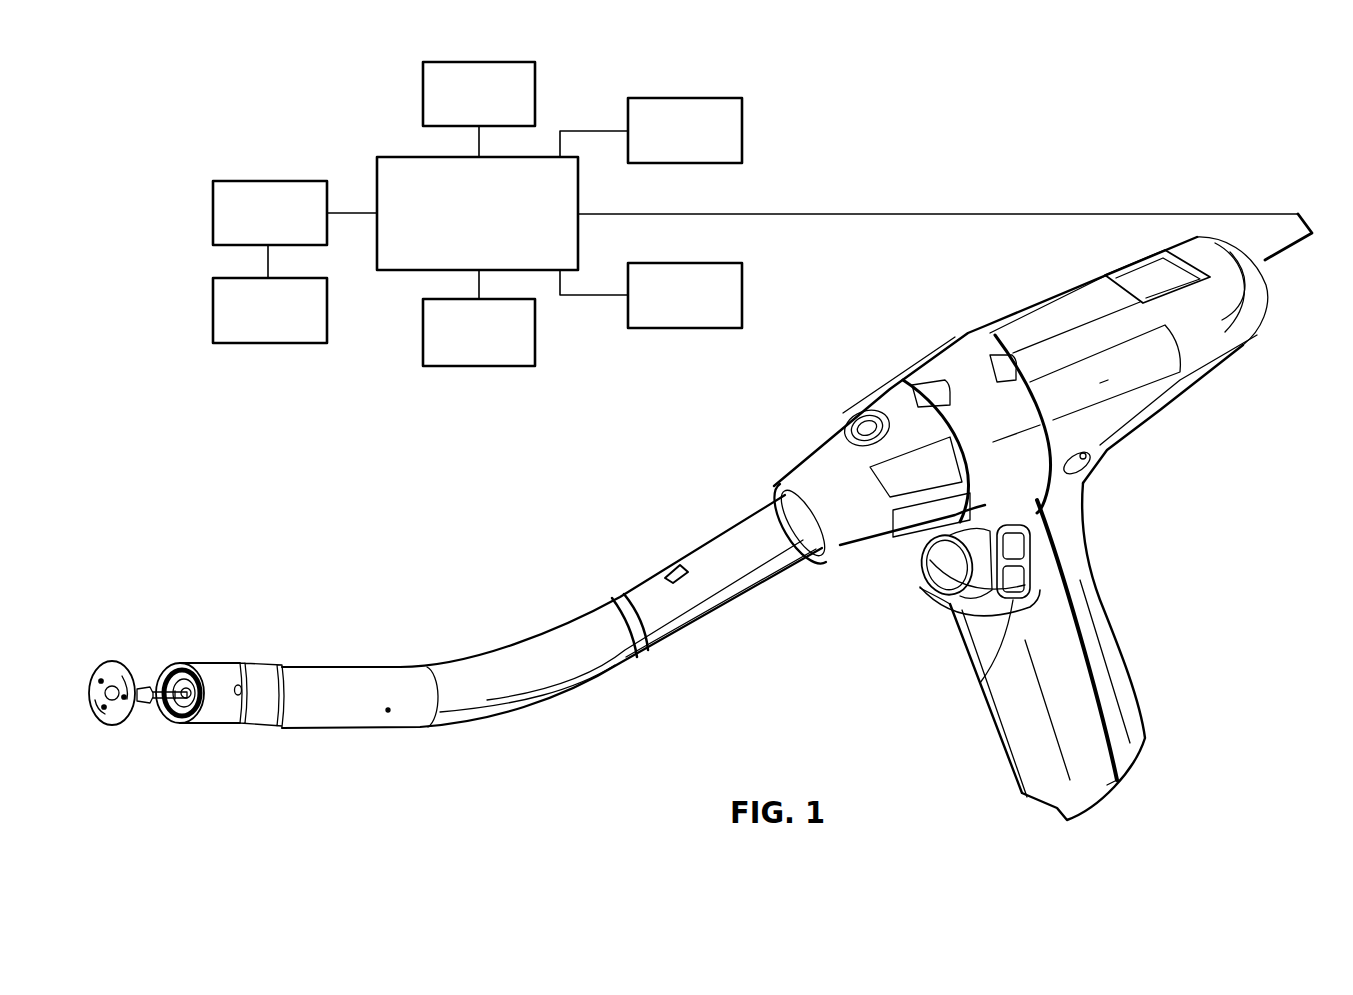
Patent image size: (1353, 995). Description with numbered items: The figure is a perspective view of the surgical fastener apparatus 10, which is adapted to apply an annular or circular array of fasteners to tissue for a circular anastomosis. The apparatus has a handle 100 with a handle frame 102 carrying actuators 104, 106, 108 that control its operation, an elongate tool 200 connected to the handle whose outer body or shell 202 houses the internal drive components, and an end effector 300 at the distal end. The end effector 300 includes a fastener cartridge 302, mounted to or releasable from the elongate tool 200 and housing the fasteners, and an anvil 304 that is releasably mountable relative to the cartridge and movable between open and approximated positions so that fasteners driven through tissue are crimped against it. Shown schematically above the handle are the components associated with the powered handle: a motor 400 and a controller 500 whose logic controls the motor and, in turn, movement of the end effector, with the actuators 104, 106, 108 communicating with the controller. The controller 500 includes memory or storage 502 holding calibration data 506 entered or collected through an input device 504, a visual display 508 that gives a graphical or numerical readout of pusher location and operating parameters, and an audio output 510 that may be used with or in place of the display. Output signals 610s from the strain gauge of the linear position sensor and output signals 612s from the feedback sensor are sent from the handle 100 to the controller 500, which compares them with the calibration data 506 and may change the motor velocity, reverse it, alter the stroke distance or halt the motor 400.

The surgical fastener apparatus 10 is at (701, 480).
The handle 100 is at (1042, 480).
The handle frame 102 is at (1025, 705).
The actuator 104 is at (1017, 597).
The actuator 106 is at (1022, 532).
The actuator 108 is at (940, 558).
The elongate tool 200 is at (552, 615).
The outer body or shell 202 is at (472, 703).
The end effector 300 is at (186, 680).
The fastener cartridge 302 is at (218, 720).
The anvil 304 is at (110, 664).
The motor 400 is at (535, 92).
The controller 500 is at (389, 270).
The memory or storage 502 is at (296, 181).
The input device 504 is at (448, 366).
The calibration data 506 is at (300, 343).
The visual display 508 is at (680, 98).
The audio output 510 is at (657, 328).
The output signal 610s is at (1287, 250).
The output signal 612s is at (1265, 260).